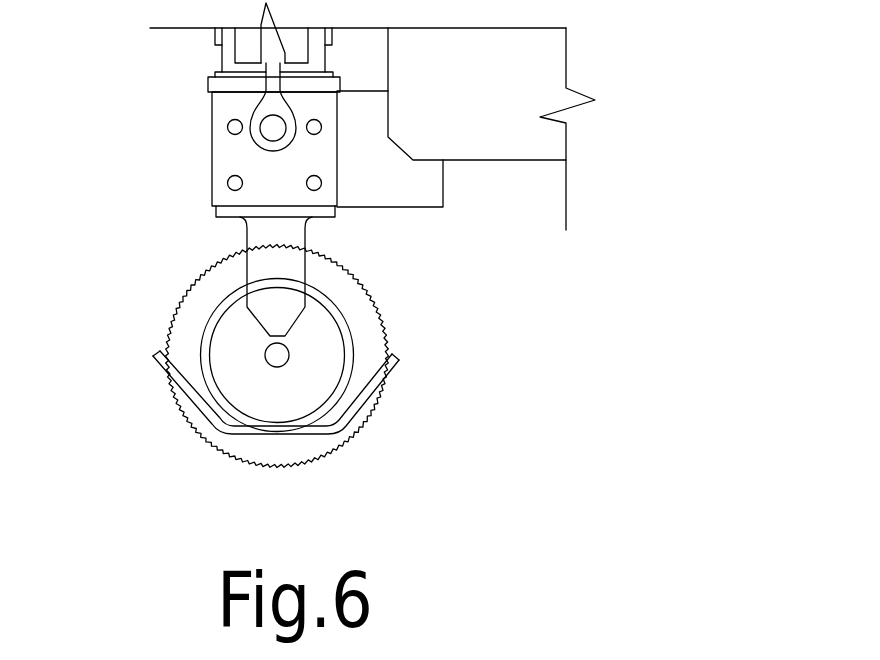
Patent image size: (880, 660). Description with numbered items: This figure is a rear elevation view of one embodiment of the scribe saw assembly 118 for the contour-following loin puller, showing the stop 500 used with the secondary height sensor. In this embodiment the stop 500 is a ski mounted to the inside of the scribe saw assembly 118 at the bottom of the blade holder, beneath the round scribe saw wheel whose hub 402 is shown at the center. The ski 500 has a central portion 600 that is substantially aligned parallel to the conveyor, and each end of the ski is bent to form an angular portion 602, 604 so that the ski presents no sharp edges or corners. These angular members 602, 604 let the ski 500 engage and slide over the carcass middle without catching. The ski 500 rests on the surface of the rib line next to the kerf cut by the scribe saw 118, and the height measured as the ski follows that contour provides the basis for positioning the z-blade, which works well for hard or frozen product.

The scribe saw assembly 118 is at (230, 162).
The wheel hub 402 is at (322, 332).
The stop 500 is at (340, 437).
The central portion 600 is at (252, 434).
The angular portion 602 is at (182, 383).
The angular portion 604 is at (398, 358).